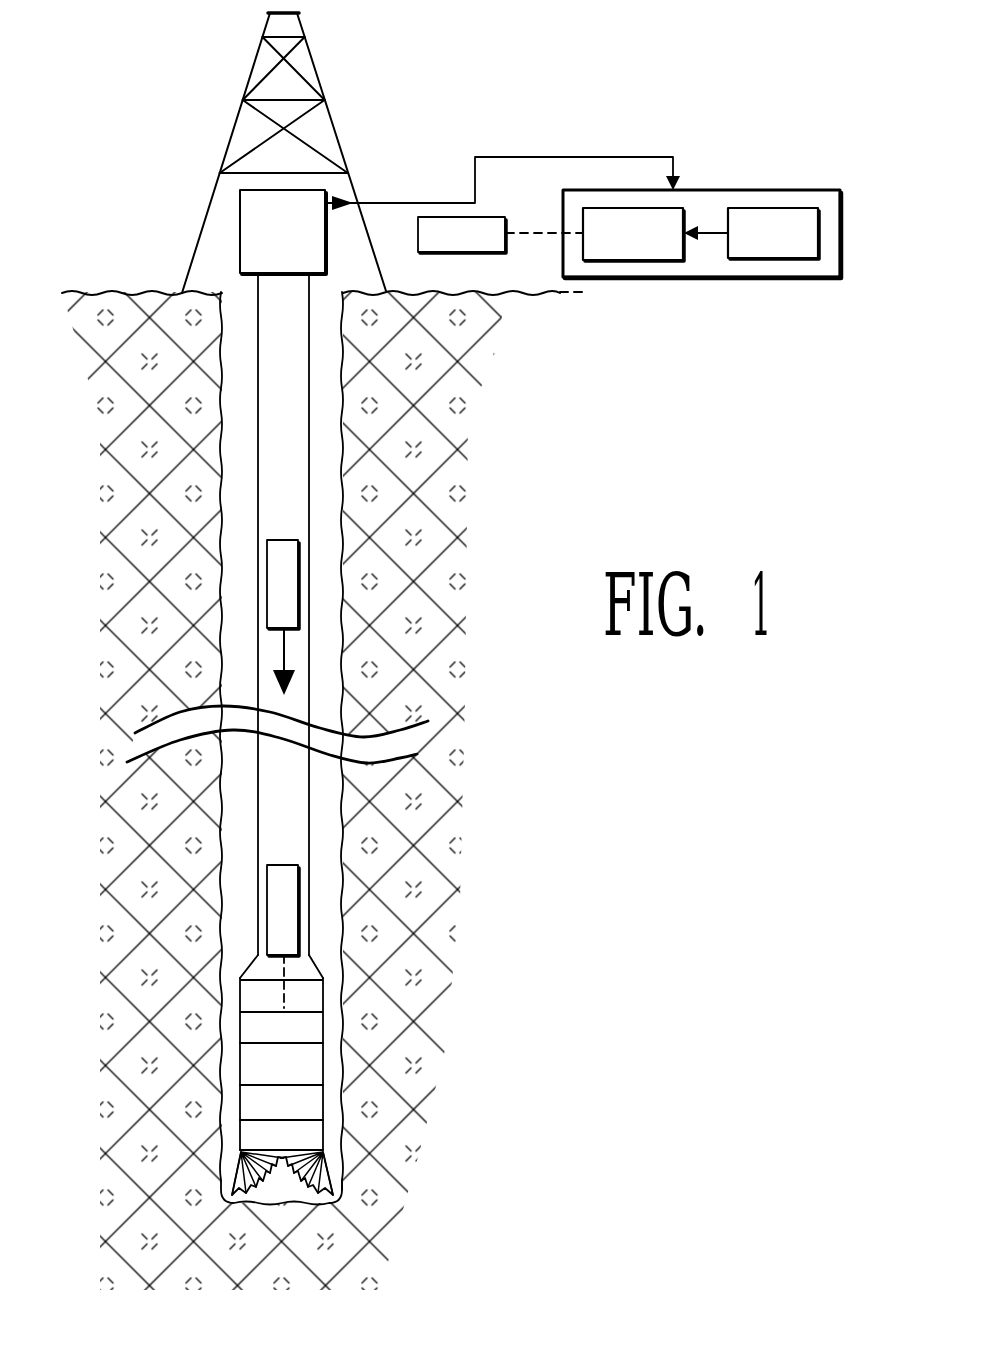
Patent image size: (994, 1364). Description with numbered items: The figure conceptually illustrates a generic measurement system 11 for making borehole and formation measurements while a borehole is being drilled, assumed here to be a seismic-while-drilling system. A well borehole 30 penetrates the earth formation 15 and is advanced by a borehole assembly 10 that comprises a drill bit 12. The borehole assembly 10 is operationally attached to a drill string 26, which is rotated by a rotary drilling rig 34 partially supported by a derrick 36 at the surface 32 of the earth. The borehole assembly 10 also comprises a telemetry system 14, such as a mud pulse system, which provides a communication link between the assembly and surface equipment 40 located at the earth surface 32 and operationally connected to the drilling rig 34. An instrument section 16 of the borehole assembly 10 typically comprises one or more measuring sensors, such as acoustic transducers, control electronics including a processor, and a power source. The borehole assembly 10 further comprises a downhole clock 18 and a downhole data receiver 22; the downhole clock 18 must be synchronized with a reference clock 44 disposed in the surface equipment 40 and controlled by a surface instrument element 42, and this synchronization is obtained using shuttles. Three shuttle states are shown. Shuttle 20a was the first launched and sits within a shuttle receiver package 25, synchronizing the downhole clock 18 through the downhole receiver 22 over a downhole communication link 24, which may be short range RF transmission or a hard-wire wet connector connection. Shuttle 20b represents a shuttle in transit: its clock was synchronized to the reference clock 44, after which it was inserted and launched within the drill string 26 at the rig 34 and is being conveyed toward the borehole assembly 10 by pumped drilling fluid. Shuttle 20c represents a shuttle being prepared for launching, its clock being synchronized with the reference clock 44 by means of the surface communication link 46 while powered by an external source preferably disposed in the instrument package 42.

The borehole assembly 10 is at (350, 1066).
The measurement system 11 is at (520, 530).
The drill bit 12 is at (232, 1168).
The telemetry system 14 is at (250, 1134).
The earth formation 15 is at (167, 599).
The instrument section 16 is at (250, 1106).
The downhole clock 18 is at (250, 1069).
The shuttle 20a is at (287, 887).
The shuttle 20b is at (290, 565).
The shuttle 20c is at (490, 248).
The downhole data receiver 22 is at (247, 1023).
The downhole communication link 24 is at (283, 978).
The shuttle receiver package 25 is at (262, 966).
The drill string 26 is at (312, 365).
The well borehole 30 is at (238, 431).
The earth surface 32 is at (140, 292).
The rotary drilling rig 34 is at (240, 233).
The derrick 36 is at (333, 123).
The surface equipment 40 is at (765, 190).
The surface instrument element 42 is at (775, 259).
The reference clock 44 is at (665, 261).
The surface communication link 46 is at (545, 233).